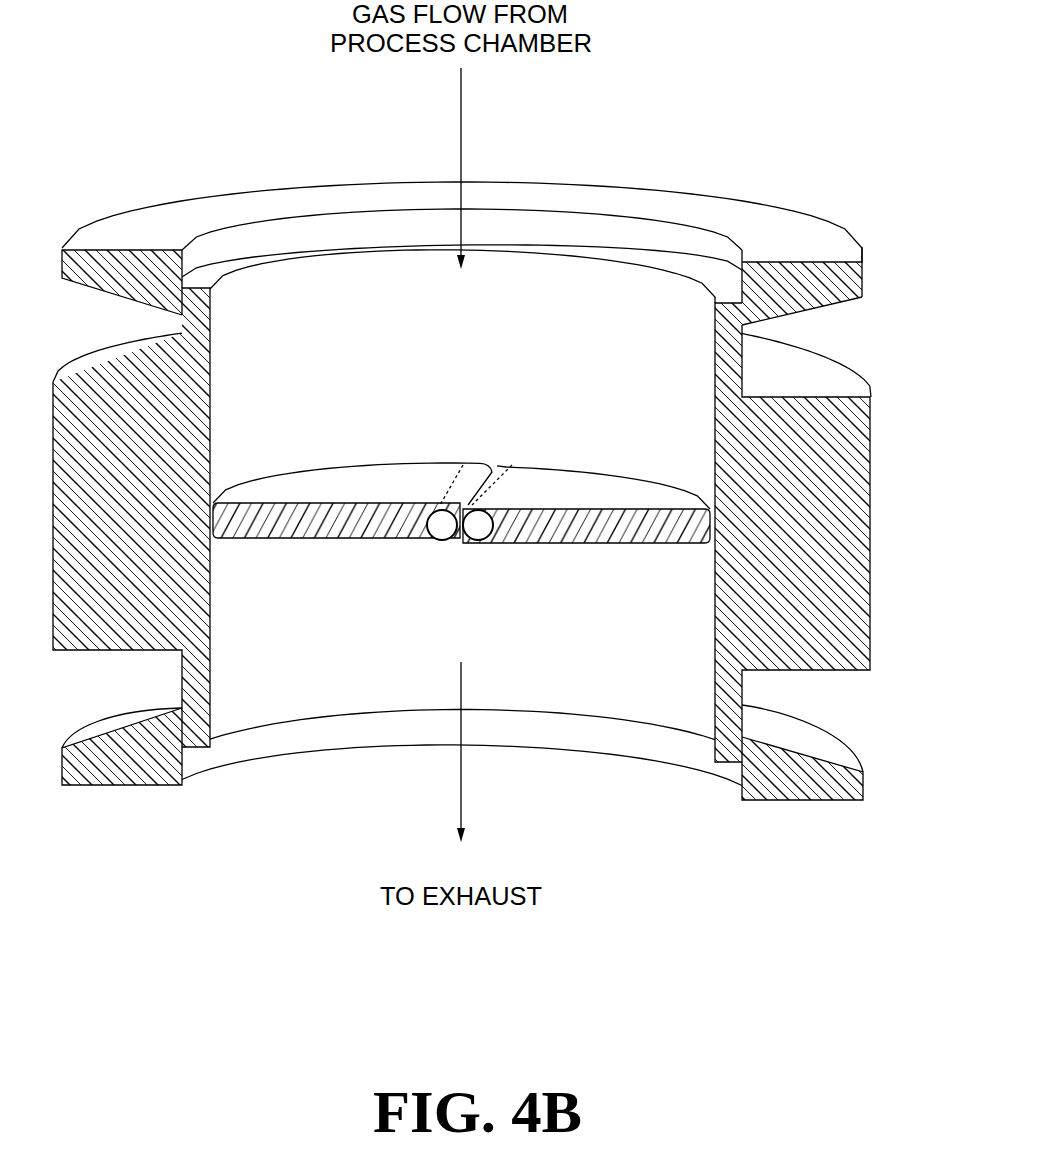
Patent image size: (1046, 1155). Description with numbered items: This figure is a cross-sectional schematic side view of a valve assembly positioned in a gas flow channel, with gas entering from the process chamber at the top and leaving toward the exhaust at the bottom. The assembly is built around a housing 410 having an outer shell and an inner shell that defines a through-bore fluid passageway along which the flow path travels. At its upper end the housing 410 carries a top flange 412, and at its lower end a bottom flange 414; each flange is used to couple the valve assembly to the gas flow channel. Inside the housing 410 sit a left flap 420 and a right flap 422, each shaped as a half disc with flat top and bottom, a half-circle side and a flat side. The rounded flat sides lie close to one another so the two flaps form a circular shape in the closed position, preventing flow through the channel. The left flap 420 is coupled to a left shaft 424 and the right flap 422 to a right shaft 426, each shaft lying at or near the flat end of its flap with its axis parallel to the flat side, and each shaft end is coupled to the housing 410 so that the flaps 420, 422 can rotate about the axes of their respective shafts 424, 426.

The housing 410 is at (862, 434).
The top flange 412 is at (827, 240).
The bottom flange 414 is at (845, 750).
The left flap 420 is at (347, 538).
The right flap 422 is at (580, 538).
The left shaft 424 is at (442, 527).
The right shaft 426 is at (478, 527).